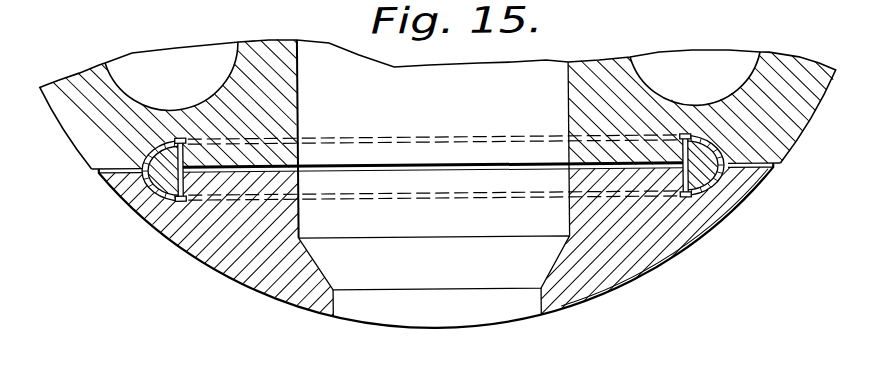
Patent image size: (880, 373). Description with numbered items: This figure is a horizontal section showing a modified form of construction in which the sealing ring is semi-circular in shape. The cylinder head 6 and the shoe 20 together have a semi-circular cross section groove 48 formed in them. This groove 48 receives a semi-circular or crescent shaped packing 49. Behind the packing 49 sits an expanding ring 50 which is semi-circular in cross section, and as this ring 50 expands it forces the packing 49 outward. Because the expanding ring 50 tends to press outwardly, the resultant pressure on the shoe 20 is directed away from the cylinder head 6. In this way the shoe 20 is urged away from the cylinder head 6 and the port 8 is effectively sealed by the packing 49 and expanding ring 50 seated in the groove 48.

The cylinder head 6 is at (118, 99).
The port 8 is at (452, 307).
The shoe 20 is at (238, 260).
The semi-circular cross section groove 48 is at (180, 135).
The packing 49 is at (142, 184).
The expanding ring 50 is at (160, 206).